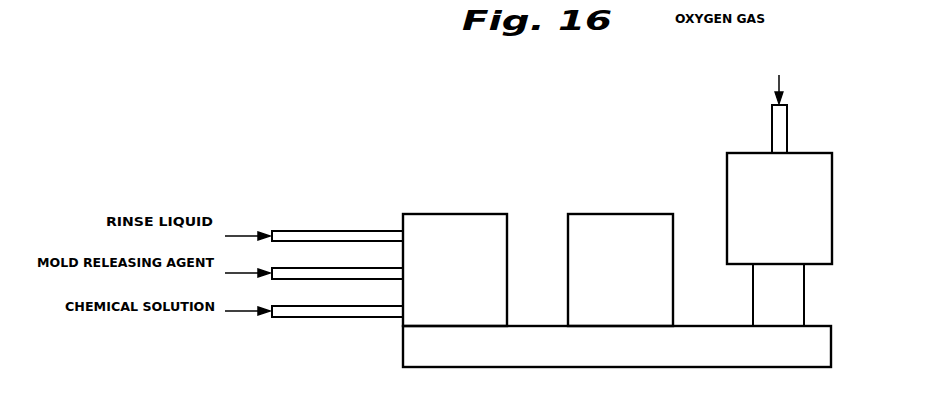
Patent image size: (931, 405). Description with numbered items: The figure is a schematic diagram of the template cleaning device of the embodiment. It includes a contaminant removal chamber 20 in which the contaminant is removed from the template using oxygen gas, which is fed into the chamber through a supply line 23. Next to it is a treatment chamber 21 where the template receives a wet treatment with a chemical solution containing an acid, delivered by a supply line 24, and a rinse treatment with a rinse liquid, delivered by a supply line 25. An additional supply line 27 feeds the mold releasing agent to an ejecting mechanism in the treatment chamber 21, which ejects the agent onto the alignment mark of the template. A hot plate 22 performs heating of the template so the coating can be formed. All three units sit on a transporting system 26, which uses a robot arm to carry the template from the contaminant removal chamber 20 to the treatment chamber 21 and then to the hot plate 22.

The contaminant removal chamber 20 is at (820, 210).
The treatment chamber 21 is at (451, 222).
The hot plate 22 is at (618, 222).
The supply line 23 is at (781, 126).
The supply line 24 is at (345, 318).
The supply line 25 is at (339, 236).
The transporting system 26 is at (820, 348).
The supply line 27 is at (313, 271).